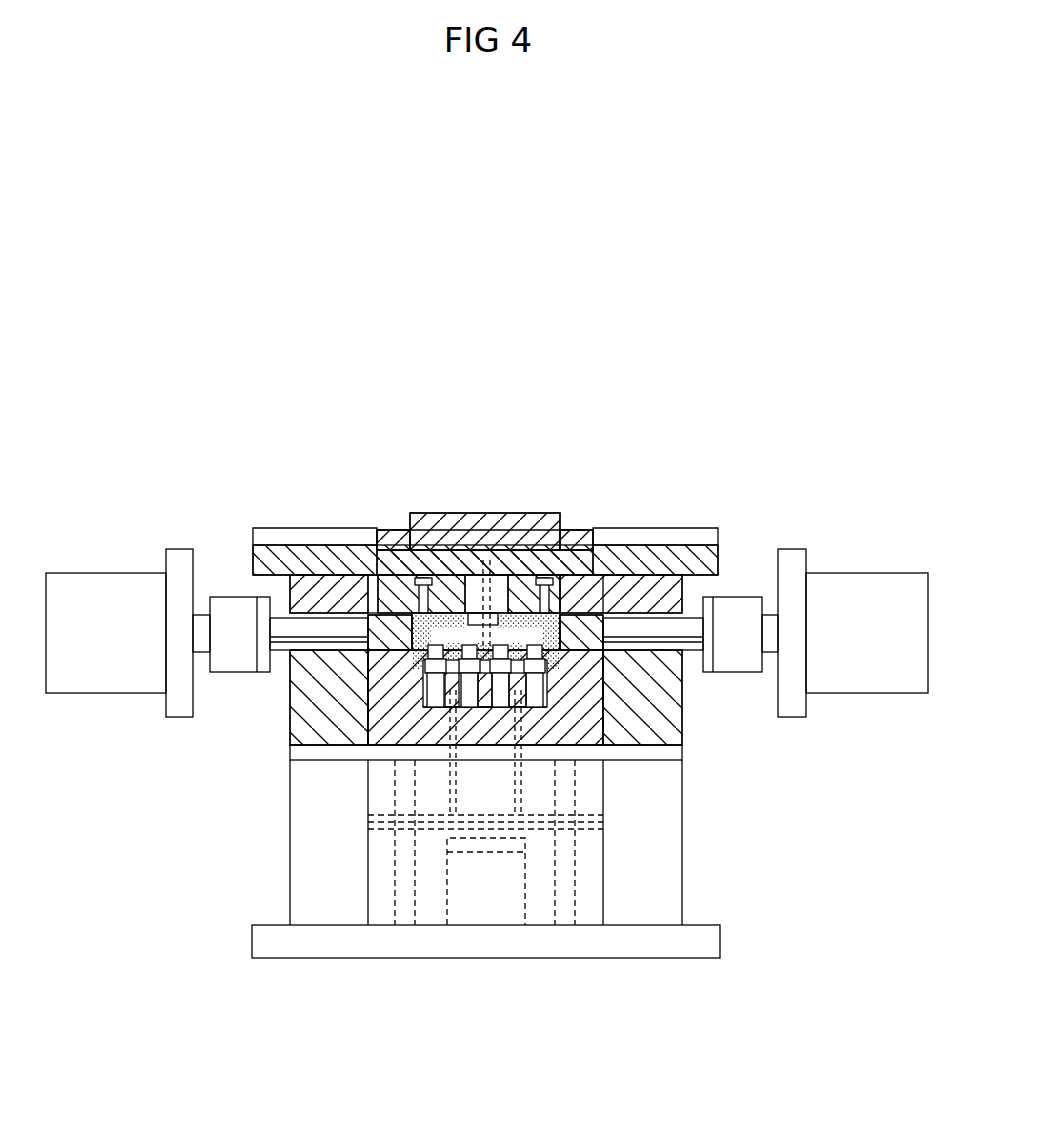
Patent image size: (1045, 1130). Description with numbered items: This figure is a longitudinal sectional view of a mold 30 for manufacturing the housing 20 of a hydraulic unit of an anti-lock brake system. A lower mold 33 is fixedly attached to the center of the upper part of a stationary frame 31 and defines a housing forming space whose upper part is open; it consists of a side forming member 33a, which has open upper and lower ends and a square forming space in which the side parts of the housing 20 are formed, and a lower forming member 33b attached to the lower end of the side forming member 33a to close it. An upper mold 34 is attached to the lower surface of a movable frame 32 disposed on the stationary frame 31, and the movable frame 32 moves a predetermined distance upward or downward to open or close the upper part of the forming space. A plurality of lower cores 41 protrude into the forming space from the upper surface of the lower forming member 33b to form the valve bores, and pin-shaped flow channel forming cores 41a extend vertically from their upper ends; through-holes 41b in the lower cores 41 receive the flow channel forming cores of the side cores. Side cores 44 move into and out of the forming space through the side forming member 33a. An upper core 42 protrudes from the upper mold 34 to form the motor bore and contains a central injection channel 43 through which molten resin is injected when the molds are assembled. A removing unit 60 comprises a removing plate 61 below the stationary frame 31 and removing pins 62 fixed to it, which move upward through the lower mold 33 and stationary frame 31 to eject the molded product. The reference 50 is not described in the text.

The housing 20 is at (428, 566).
The mold 30 is at (692, 486).
The stationary frame 31 is at (300, 722).
The movable frame 32 is at (302, 543).
The lower mold 33 is at (632, 690).
The side forming member 33a is at (612, 692).
The lower forming member 33b is at (648, 742).
The upper mold 34 is at (548, 552).
The lower cores 41 is at (395, 700).
The flow channel forming cores 41a is at (393, 572).
The through-holes 41b is at (468, 663).
The upper core 42 is at (500, 546).
The injection channel 43 is at (462, 548).
The side cores 44 is at (378, 612).
The drive motor 50 is at (108, 578).
The removing unit 60 is at (368, 803).
The removing plate 61 is at (603, 817).
The removing pins 62 is at (520, 702).